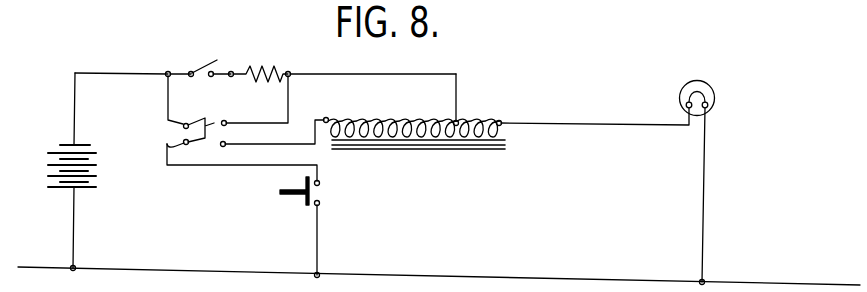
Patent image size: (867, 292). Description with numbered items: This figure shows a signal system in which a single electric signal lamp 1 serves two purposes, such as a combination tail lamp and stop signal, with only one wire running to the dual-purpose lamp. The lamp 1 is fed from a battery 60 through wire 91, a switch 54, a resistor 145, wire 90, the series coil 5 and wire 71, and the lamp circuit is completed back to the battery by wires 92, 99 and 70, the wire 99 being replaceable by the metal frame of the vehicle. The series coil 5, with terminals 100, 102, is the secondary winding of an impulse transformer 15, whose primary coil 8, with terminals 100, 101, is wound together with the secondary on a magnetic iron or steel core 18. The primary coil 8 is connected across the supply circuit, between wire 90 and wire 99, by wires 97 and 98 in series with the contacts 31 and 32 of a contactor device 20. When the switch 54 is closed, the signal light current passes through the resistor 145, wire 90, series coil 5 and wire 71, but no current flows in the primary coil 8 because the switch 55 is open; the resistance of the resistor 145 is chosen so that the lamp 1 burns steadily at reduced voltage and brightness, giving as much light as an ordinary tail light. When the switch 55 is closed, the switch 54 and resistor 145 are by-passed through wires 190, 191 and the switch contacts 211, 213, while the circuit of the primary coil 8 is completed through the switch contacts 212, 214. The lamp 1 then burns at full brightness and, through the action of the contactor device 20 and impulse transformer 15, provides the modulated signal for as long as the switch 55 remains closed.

The electric signal lamp 1 is at (709, 88).
The series coil 5 is at (470, 122).
The primary coil 8 is at (388, 120).
The impulse transformer 15 is at (410, 144).
The core 18 is at (437, 148).
The contactor device 20 is at (296, 204).
The contact 31 is at (320, 205).
The contact 32 is at (321, 183).
The switch 54 is at (202, 66).
The switch 55 is at (198, 115).
The battery 60 is at (63, 145).
The wire 70 is at (705, 194).
The wire 71 is at (591, 129).
The wire 90 is at (357, 74).
The wire 91 is at (113, 72).
The wire 92 is at (72, 224).
The wire 97 is at (223, 167).
The wire 98 is at (317, 249).
The wire 99 is at (478, 278).
The terminal 100 is at (454, 121).
The terminal 101 is at (328, 118).
The terminal 102 is at (502, 121).
The resistor 145 is at (253, 67).
The wire 190 is at (288, 95).
The wire 191 is at (167, 97).
The switch contact 211 is at (183, 126).
The switch contact 212 is at (176, 146).
The switch contact 213 is at (225, 122).
The switch contact 214 is at (225, 147).